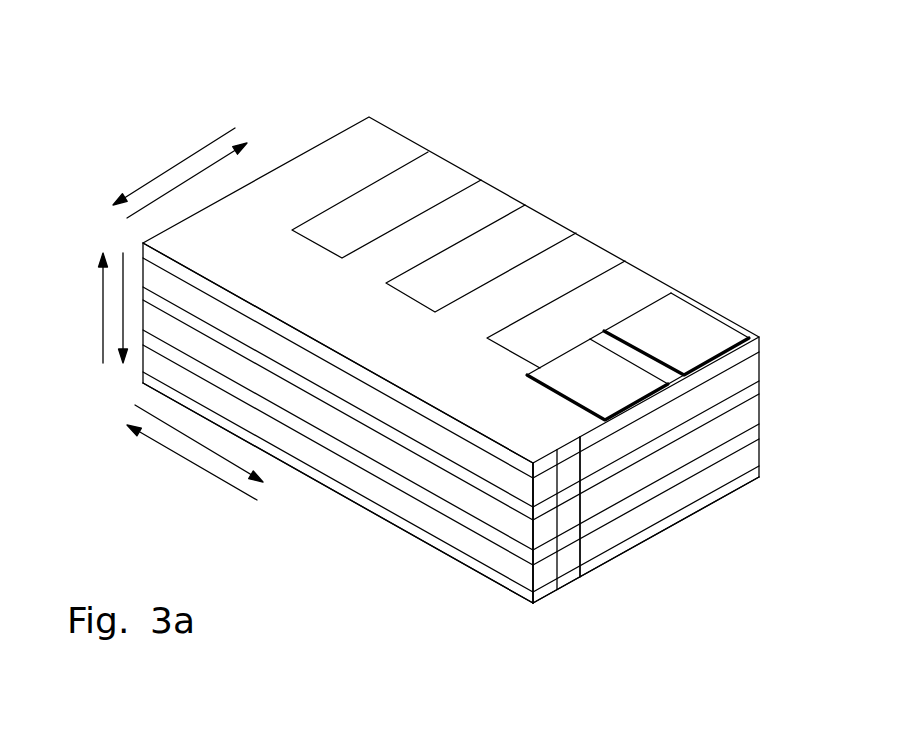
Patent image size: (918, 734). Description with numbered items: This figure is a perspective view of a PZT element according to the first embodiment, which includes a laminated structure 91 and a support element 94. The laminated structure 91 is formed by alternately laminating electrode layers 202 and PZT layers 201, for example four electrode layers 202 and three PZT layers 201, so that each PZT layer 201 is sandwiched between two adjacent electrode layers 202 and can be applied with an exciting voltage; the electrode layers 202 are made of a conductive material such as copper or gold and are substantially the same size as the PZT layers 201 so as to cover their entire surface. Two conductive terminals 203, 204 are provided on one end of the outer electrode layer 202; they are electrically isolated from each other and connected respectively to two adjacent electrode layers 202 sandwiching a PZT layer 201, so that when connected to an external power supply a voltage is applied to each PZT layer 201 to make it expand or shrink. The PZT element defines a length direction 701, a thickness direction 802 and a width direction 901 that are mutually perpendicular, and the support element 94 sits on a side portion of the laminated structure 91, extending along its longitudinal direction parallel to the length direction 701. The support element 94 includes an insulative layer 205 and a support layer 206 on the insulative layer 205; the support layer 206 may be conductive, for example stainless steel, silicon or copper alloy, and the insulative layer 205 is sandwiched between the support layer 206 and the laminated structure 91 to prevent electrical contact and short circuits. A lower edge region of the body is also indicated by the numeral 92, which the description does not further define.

The laminated structure 91 is at (437, 144).
The bottom surface of body 92 is at (743, 487).
The support element 94 is at (553, 682).
The PZT layer 201 is at (748, 452).
The electrode layer 202 is at (628, 417).
The conductive terminal 203 is at (686, 320).
The conductive terminal 204 is at (653, 271).
The insulative layer 205 is at (572, 573).
The support layer 206 is at (503, 560).
The length direction 701 is at (187, 437).
The thickness direction 802 is at (123, 308).
The width direction 901 is at (195, 175).